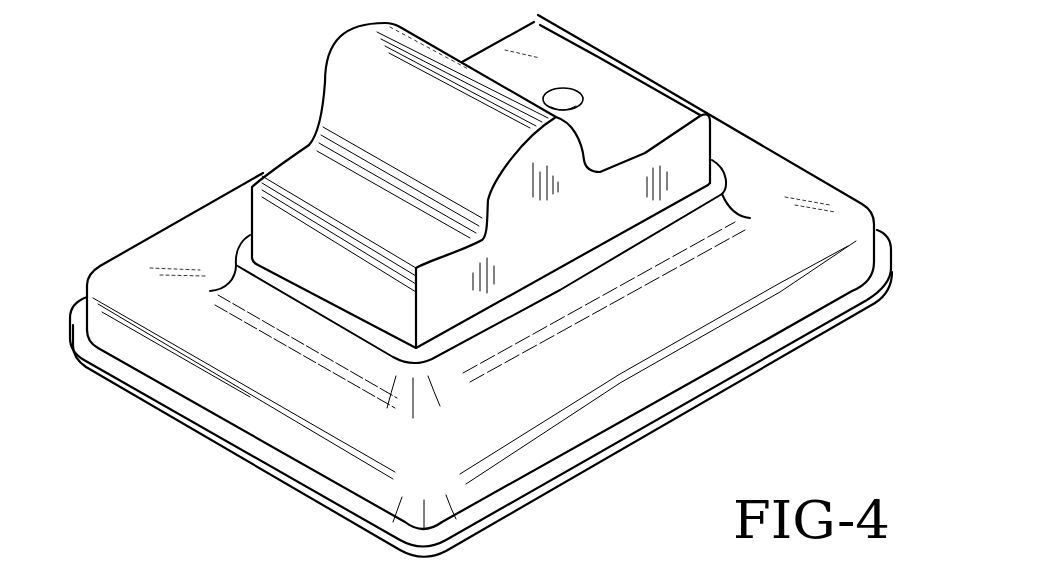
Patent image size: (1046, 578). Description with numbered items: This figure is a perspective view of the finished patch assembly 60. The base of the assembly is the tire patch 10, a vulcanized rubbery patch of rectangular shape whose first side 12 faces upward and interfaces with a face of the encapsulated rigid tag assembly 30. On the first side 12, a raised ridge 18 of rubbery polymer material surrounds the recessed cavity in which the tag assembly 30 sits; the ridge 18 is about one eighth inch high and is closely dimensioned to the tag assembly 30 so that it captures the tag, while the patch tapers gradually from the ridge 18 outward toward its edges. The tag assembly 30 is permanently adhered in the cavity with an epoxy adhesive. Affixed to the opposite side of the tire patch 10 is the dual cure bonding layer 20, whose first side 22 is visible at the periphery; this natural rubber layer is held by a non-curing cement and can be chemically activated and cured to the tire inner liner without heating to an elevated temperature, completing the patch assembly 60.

The tire patch 10 is at (476, 286).
The first side 12 is at (138, 277).
The raised ridge 18 is at (675, 241).
The dual cure bonding layer 20 is at (244, 460).
The first side 22 is at (314, 486).
The tag assembly 30 is at (458, 314).
The patch assembly 60 is at (476, 286).